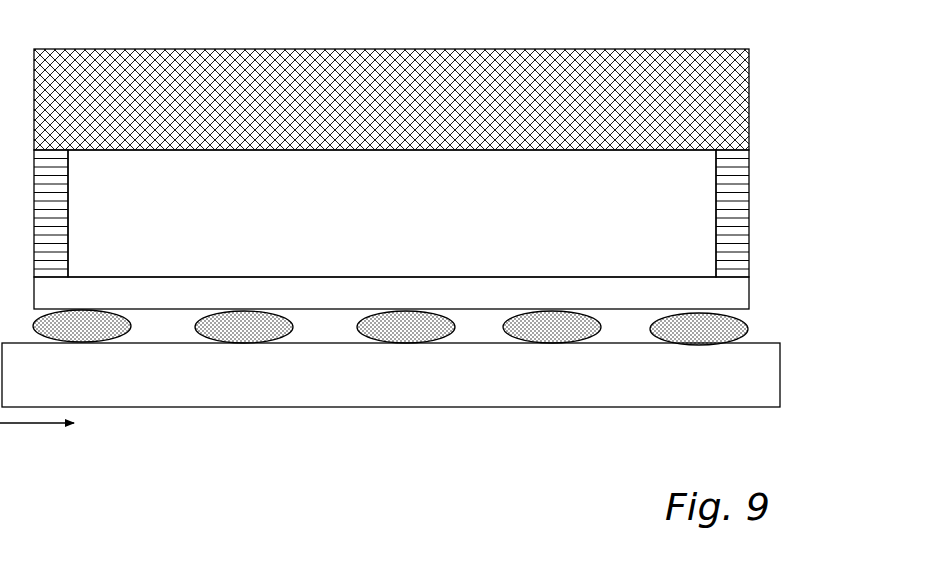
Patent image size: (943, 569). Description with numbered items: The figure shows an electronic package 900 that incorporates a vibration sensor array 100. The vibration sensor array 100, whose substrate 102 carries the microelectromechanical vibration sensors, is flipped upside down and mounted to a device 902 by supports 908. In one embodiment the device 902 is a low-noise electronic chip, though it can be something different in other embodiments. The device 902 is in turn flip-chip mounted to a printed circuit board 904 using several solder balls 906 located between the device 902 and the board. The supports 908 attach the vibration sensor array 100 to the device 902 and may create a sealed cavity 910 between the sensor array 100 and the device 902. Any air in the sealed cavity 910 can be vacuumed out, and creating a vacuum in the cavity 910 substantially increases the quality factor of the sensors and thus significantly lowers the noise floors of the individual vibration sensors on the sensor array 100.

The vibration sensor array 100 is at (437, 78).
The substrate 102 is at (749, 80).
The electronic package 900 is at (420, 258).
The device 902 is at (408, 304).
The printed circuit board 904 is at (408, 384).
The solder balls 906 is at (390, 327).
The supports 908 is at (43, 212).
The sealed cavity 910 is at (392, 213).